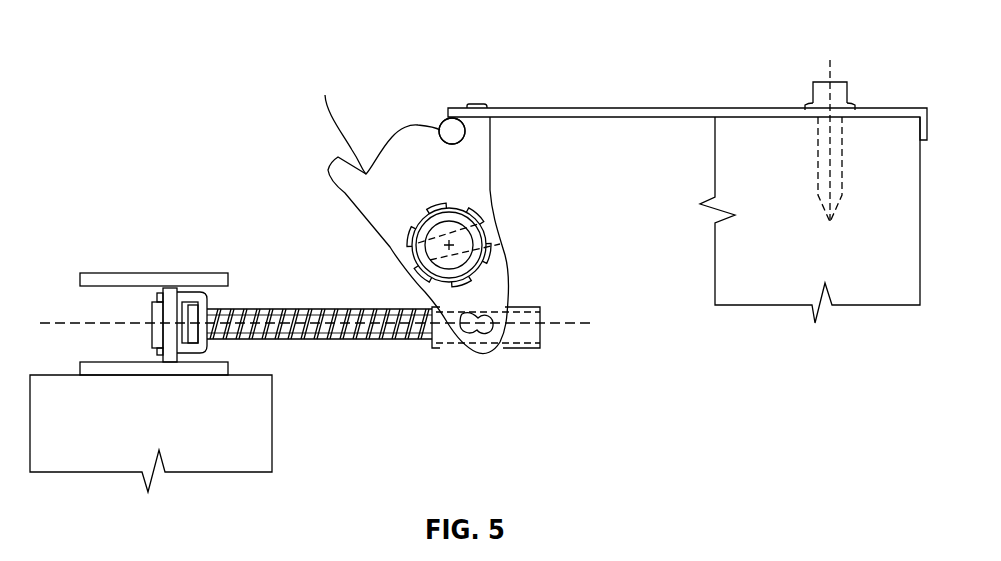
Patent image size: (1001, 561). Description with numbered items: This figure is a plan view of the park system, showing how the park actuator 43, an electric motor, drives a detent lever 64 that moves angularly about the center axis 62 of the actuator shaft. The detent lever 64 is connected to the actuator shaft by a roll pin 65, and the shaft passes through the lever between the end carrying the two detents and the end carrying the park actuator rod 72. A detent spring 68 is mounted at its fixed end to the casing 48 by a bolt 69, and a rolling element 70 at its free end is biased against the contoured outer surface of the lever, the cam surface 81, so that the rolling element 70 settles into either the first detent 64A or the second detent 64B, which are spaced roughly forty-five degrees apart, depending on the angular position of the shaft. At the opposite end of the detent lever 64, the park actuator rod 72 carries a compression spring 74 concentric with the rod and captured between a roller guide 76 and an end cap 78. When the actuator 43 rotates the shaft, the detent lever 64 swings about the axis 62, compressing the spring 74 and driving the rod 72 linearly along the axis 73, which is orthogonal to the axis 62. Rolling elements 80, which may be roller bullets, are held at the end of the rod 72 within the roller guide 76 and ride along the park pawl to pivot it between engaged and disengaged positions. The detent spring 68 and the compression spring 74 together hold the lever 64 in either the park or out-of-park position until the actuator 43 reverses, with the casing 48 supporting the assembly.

The park actuator 43 is at (450, 244).
The casing 48 is at (870, 283).
The center axis 62 is at (479, 224).
The detent lever 64 is at (362, 192).
The first detent 64A is at (410, 124).
The second detent 64B is at (326, 82).
The roll pin 65 is at (497, 250).
The detent spring 68 is at (636, 108).
The bolt 69 is at (838, 80).
The rolling element 70 is at (451, 128).
The park actuator rod 72 is at (338, 340).
The axis 73 is at (64, 322).
The compression spring 74 is at (313, 307).
The roller guide 76 is at (99, 273).
The end cap 78 is at (442, 348).
The rolling elements 80 is at (168, 295).
The cam surface 81 is at (458, 118).